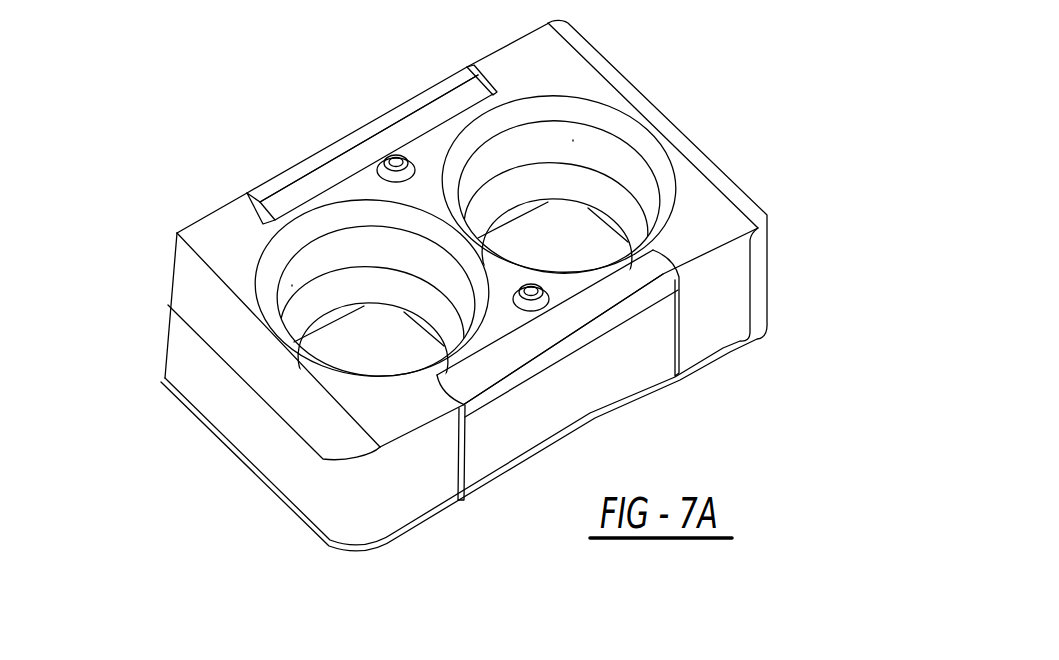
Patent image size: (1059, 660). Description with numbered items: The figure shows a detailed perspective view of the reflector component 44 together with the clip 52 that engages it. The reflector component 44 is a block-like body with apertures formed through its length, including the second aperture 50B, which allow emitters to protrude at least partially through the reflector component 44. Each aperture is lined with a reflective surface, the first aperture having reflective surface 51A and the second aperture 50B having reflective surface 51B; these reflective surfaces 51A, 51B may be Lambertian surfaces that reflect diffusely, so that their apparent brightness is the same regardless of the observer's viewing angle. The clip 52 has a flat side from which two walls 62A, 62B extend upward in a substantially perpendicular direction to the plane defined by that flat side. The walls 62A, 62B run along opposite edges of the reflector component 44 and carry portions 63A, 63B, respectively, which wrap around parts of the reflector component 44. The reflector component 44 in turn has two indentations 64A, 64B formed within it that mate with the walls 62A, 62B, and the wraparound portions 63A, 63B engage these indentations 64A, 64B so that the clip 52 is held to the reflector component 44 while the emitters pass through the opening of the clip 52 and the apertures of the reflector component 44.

The reflector component 44 is at (713, 218).
The second aperture 50B is at (603, 187).
The reflective surface 51A is at (292, 285).
The reflective surface 51B is at (573, 141).
The clip 52 is at (441, 98).
The wall 62A is at (298, 178).
The wall 62B is at (597, 372).
The portion 63A is at (382, 125).
The portion 63B is at (613, 285).
The indentation 64A is at (263, 212).
The indentation 64B is at (458, 463).